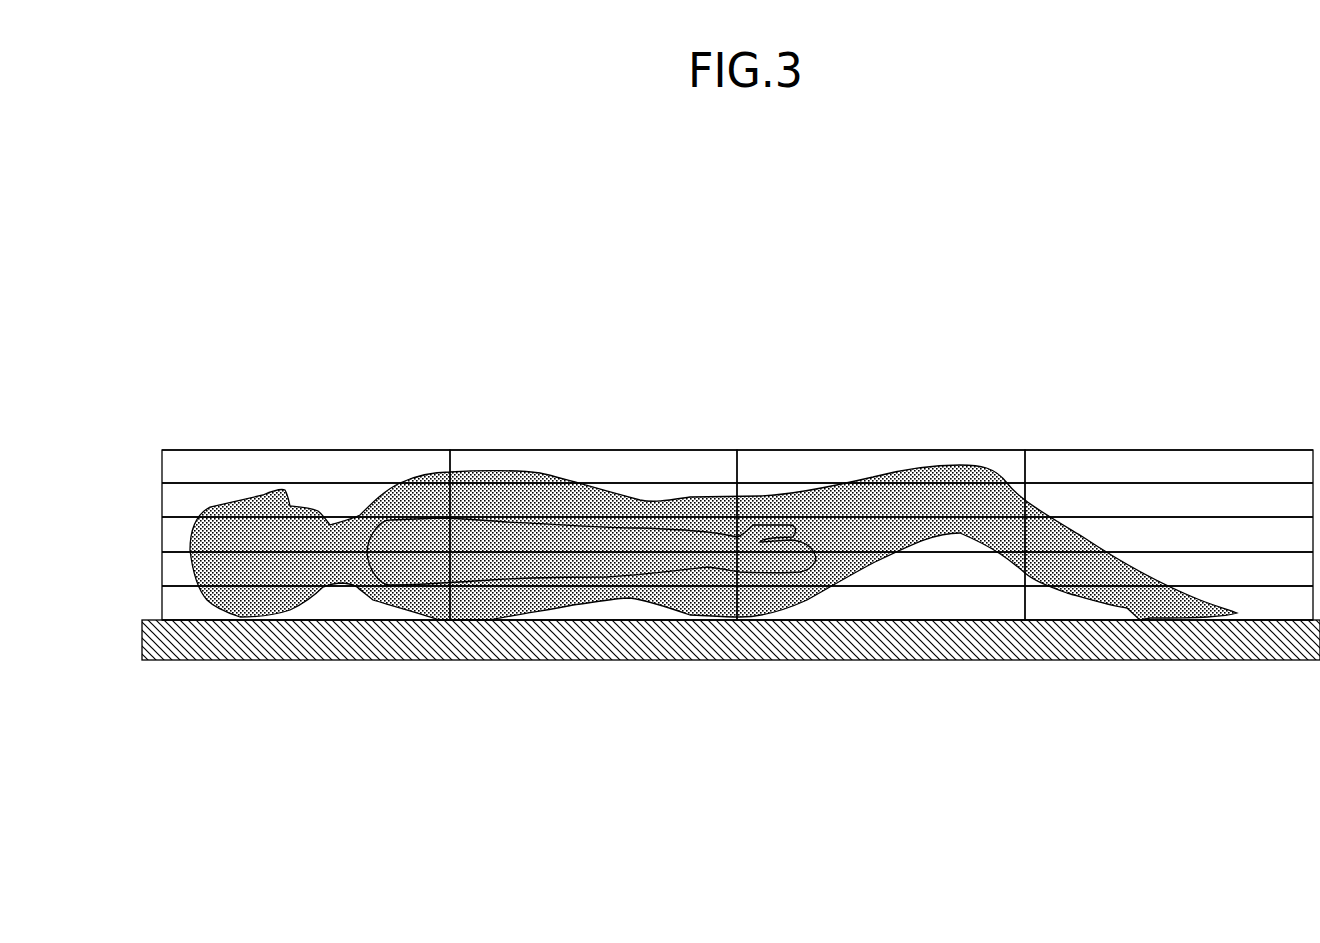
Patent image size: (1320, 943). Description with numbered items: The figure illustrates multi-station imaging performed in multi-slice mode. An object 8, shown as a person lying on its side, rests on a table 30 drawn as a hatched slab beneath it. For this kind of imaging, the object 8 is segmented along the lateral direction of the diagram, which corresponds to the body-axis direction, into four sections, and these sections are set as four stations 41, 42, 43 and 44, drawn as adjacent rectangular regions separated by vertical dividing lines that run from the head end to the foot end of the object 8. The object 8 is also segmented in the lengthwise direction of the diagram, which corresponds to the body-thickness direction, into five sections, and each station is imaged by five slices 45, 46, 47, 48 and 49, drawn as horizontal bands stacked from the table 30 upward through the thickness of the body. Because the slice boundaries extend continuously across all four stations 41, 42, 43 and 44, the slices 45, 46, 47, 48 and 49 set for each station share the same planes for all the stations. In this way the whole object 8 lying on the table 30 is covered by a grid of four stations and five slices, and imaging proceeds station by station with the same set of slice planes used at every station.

The object 8 is at (665, 500).
The table 30 is at (642, 650).
The station 41 is at (257, 447).
The station 42 is at (538, 447).
The station 43 is at (878, 447).
The station 44 is at (1131, 447).
The slice 45 is at (162, 597).
The slice 46 is at (162, 563).
The slice 47 is at (162, 530).
The slice 48 is at (162, 498).
The slice 49 is at (162, 460).